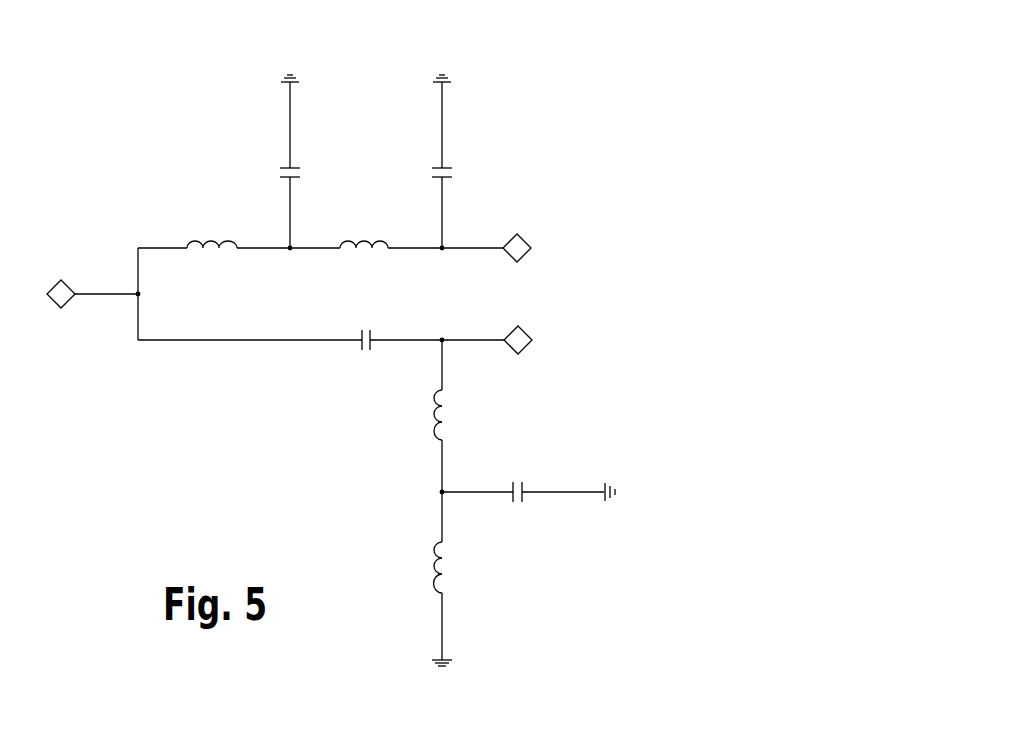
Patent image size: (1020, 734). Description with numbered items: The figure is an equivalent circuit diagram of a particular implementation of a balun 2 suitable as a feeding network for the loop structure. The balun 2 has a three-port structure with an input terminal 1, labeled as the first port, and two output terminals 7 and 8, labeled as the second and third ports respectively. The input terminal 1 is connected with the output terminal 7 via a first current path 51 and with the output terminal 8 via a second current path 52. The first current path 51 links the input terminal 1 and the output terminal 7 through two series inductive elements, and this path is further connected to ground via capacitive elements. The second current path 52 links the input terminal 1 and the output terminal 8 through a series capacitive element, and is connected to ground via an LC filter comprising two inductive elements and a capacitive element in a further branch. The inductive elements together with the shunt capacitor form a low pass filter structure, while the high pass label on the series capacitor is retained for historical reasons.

The input terminal 1 is at (55, 303).
The balun 2 is at (578, 82).
The output terminal 7 is at (532, 248).
The output terminal 8 is at (530, 340).
The first current path 51 is at (168, 248).
The second current path 52 is at (238, 340).